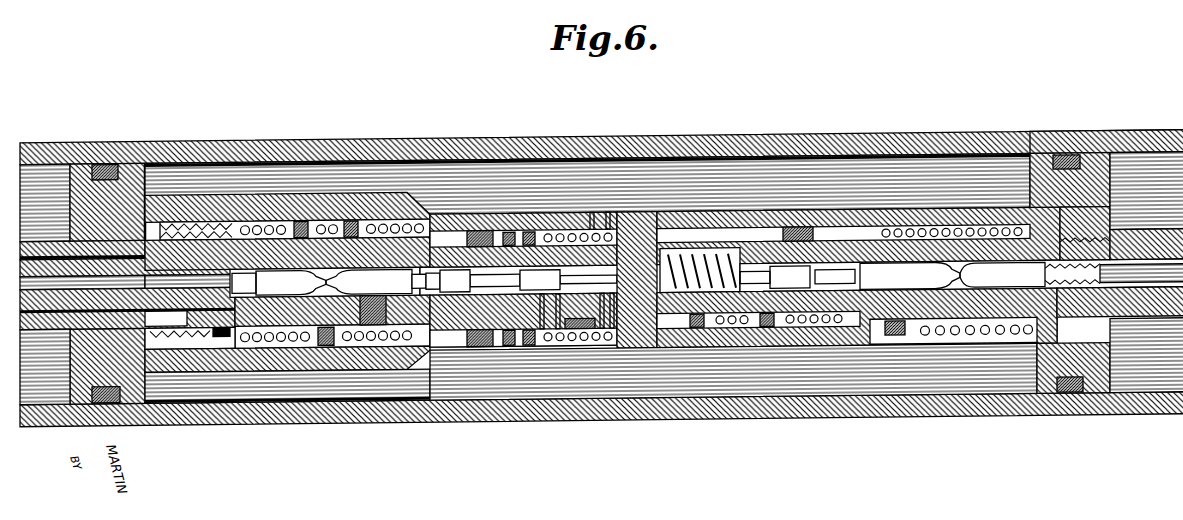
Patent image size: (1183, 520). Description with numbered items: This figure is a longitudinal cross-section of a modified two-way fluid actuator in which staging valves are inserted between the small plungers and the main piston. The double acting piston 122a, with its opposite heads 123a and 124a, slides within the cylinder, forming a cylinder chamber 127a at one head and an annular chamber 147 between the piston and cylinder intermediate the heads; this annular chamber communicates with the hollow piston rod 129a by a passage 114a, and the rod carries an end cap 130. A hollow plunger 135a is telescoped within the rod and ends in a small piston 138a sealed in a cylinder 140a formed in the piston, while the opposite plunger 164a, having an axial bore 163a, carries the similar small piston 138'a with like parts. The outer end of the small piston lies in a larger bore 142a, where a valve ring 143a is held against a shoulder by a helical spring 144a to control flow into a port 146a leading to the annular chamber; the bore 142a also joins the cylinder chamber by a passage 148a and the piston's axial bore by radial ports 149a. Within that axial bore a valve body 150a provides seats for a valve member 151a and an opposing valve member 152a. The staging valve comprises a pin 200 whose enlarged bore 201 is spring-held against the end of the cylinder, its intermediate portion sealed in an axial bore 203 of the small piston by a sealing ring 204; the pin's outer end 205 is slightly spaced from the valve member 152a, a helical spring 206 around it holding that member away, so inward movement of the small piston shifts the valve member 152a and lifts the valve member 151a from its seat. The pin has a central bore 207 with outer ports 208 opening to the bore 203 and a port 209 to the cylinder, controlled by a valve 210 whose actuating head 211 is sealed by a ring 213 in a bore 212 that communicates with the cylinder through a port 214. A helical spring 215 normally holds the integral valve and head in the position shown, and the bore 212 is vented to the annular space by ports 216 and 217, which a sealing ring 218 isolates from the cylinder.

The passage 114a is at (146, 170).
The piston 122a is at (692, 146).
The piston head 123a is at (85, 165).
The piston head 124a is at (1012, 147).
The cylinder chamber 127a is at (50, 180).
The piston rod 129a is at (33, 243).
The end cap 130 is at (378, 250).
The plunger 135a is at (178, 376).
The small piston 138a is at (480, 238).
The small piston 138'a is at (804, 165).
The cylinder 140a is at (578, 336).
The bore 142a is at (280, 350).
The valve ring 143a is at (325, 366).
The helical spring 144a is at (300, 226).
The port 146a is at (587, 382).
The annular chamber 147 is at (780, 382).
The passage 148a is at (150, 330).
The radial port 149a is at (350, 226).
The valve body 150a is at (255, 235).
The valve member 151a is at (278, 230).
The valve member 152a is at (312, 322).
The axial bore 163a is at (1162, 240).
The plunger 164a is at (1165, 332).
The pin 200 is at (485, 300).
The enlarged bore 201 is at (640, 222).
The axial bore 203 is at (422, 278).
The sealing ring 204 is at (455, 330).
The pin outer end 205 is at (375, 330).
The helical spring 206 is at (412, 265).
The central bore 207 is at (510, 240).
The port 208 is at (450, 275).
The port 209 is at (505, 352).
The valve 210 is at (530, 240).
The actuating head 211 is at (543, 336).
The bore 212 is at (560, 241).
The sealing ring 213 is at (558, 336).
The port 214 is at (527, 352).
The helical spring 215 is at (608, 232).
The vent port 216 is at (602, 336).
The vent port 217 is at (612, 336).
The sealing ring 218 is at (592, 232).